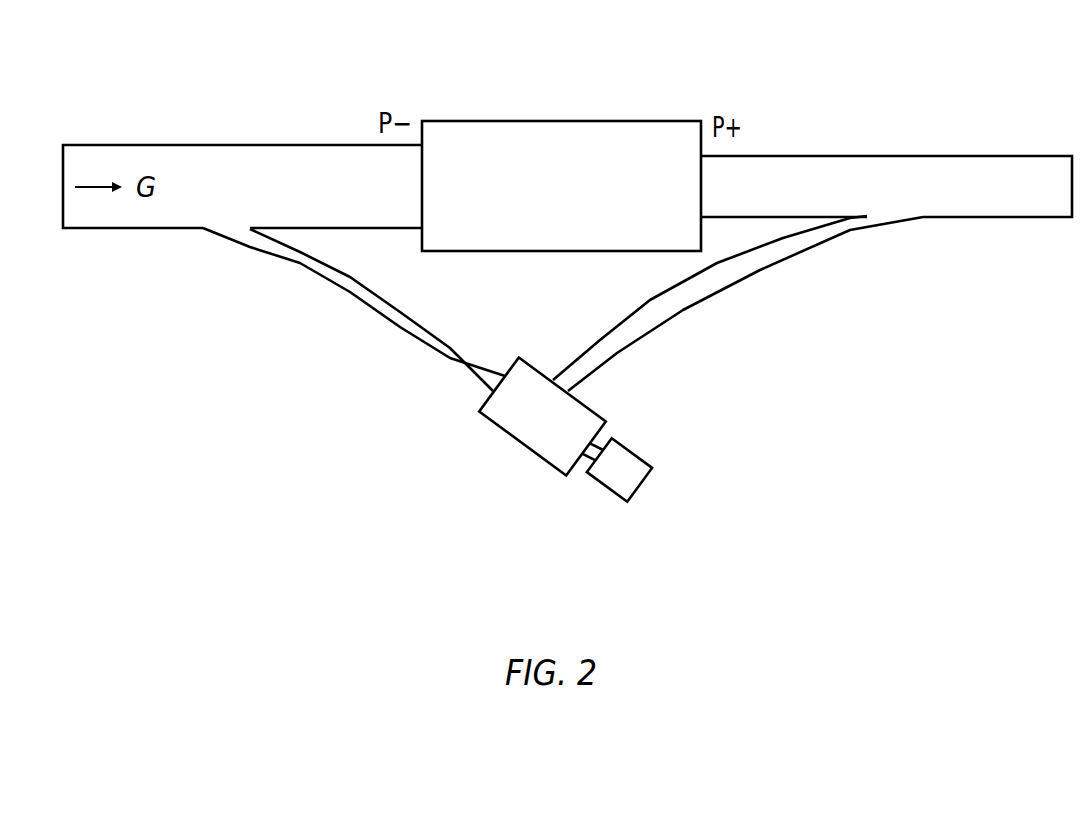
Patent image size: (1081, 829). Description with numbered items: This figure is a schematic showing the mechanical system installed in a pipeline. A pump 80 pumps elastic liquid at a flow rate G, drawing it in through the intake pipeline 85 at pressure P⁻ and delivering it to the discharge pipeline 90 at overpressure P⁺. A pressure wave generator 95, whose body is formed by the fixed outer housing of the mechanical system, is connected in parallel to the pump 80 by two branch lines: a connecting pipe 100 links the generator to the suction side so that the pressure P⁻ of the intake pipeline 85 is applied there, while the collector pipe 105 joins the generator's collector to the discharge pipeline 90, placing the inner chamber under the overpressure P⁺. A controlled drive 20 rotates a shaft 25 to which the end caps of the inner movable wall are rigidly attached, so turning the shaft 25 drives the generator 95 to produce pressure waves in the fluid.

The intake pipeline 85 is at (248, 143).
The pump 80 is at (560, 120).
The discharge pipeline 90 is at (912, 154).
The connecting pipe 100 is at (347, 287).
The collector connecting pipe 105 is at (762, 270).
The pressure wave generator 95 is at (510, 438).
The shaft 25 is at (585, 462).
The controlled drive 20 is at (638, 452).